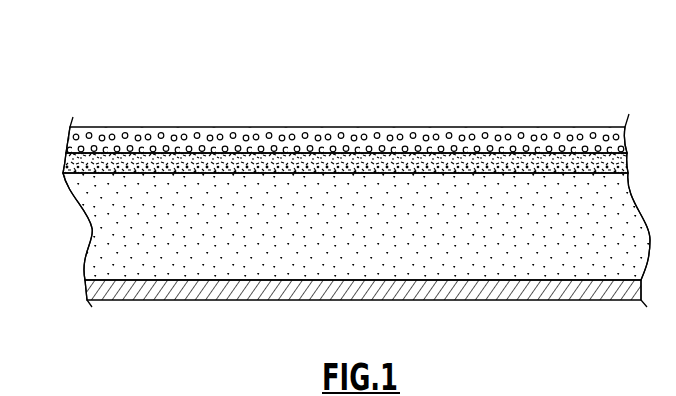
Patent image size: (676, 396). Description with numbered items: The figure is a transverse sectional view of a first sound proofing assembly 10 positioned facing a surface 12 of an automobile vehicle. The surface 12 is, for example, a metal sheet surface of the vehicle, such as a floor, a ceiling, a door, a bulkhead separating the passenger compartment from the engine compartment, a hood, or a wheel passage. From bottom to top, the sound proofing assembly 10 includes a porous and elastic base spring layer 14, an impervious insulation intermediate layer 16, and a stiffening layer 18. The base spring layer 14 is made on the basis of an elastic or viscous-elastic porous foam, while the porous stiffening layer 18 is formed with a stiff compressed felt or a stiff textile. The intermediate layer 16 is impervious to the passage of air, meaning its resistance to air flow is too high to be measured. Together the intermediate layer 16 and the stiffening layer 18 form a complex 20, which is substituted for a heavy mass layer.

The sound proofing assembly 10 is at (560, 74).
The surface 12 is at (523, 301).
The base spring layer 14 is at (247, 258).
The intermediate layer 16 is at (275, 168).
The stiffening layer 18 is at (385, 137).
The complex 20 is at (56, 123).